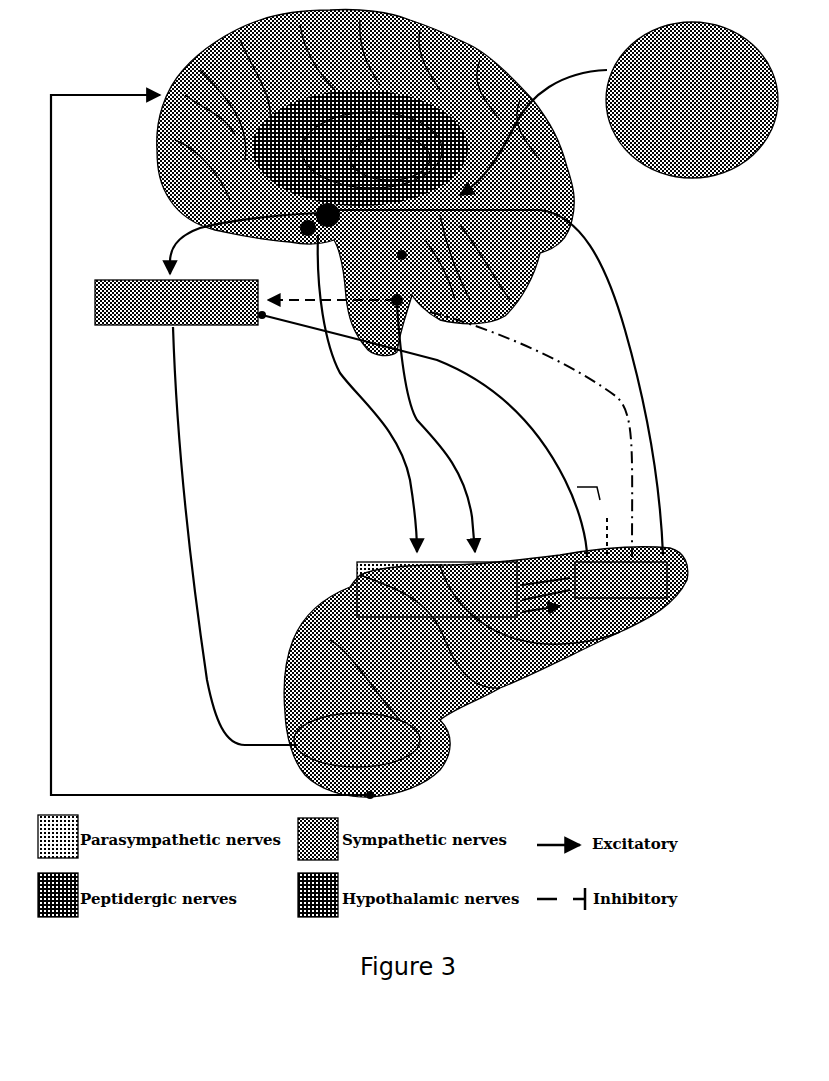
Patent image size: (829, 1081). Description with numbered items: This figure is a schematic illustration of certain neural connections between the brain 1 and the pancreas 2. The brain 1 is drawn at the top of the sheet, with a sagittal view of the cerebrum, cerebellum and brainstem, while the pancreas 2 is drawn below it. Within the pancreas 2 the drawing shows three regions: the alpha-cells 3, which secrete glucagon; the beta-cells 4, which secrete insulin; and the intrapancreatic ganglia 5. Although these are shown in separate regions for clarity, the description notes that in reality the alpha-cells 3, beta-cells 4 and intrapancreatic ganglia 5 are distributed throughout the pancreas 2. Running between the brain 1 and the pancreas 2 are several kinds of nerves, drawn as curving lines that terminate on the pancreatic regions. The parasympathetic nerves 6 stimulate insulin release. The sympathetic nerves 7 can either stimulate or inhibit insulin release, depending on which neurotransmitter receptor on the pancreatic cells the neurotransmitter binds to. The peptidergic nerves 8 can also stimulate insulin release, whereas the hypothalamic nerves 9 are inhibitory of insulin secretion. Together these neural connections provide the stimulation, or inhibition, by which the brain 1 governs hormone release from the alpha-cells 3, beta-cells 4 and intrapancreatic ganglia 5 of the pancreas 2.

The brain 1 is at (565, 198).
The pancreas 2 is at (550, 653).
The alpha-cells 3 is at (420, 743).
The beta-cells 4 is at (673, 590).
The intrapancreatic ganglia 5 is at (350, 573).
The parasympathetic nerves 6 is at (545, 95).
The sympathetic nerves 7 is at (180, 512).
The peptidergic nerves 8 is at (630, 430).
The hypothalamic nerves 9 is at (400, 465).